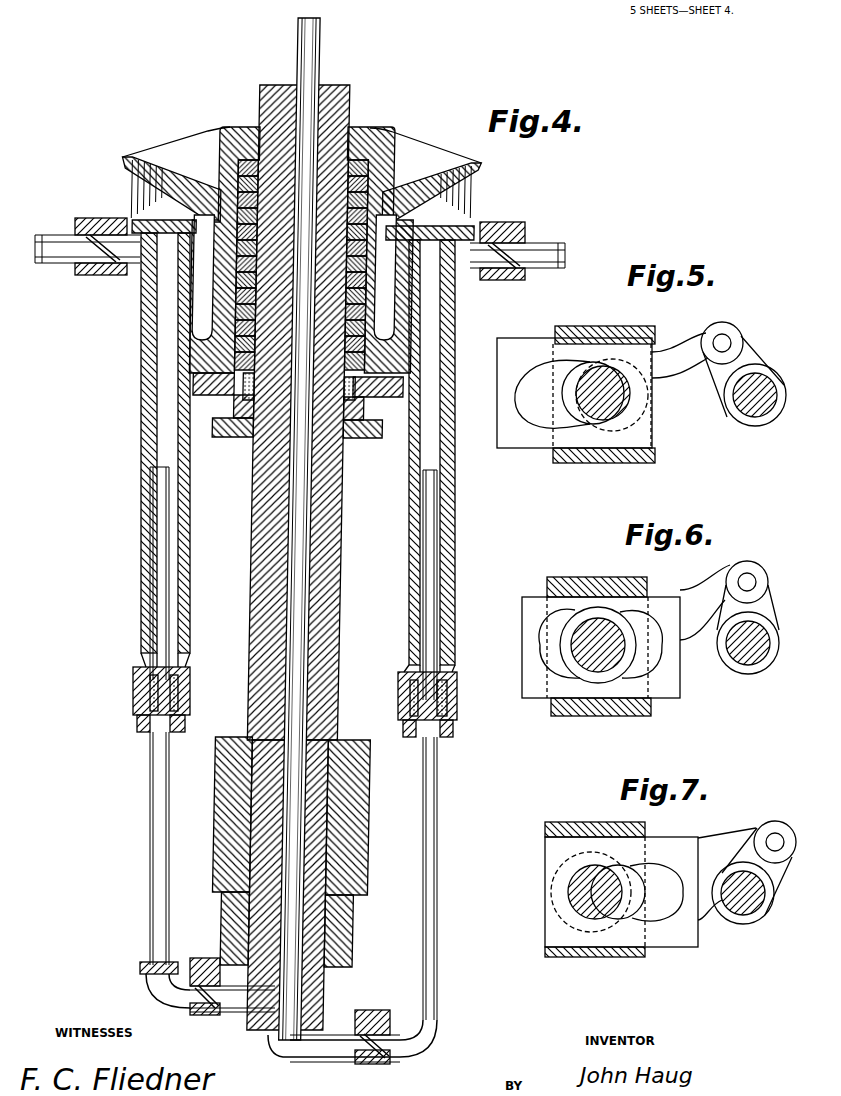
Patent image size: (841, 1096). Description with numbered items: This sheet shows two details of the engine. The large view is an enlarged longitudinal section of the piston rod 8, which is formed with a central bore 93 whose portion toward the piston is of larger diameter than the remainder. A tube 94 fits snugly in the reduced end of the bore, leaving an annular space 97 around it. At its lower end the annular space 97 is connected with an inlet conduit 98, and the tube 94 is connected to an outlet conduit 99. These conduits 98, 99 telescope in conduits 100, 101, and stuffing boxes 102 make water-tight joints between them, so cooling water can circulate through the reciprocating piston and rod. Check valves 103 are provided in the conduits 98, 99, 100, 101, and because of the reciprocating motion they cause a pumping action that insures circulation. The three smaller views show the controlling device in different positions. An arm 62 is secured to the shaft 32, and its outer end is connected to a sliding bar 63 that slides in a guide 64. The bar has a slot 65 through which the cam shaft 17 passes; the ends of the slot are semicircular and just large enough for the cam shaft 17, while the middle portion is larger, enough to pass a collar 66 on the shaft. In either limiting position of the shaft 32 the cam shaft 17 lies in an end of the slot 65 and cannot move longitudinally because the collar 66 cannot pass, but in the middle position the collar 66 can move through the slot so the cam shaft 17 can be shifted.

In FIG. 4, the piston rod 8 is at (334, 492).
In FIG. 5, the cam shaft 17 is at (615, 380).
In FIG. 6, the cam shaft 17 is at (590, 630).
In FIG. 7, the cam shaft 17 is at (586, 870).
In FIG. 5, the shaft 32 is at (757, 414).
In FIG. 6, the shaft 32 is at (751, 665).
In FIG. 7, the shaft 32 is at (750, 912).
In FIG. 5, the arm 62 is at (752, 360).
In FIG. 6, the arm 62 is at (772, 604).
In FIG. 7, the arm 62 is at (745, 846).
In FIG. 5, the sliding bar 63 is at (660, 370).
In FIG. 6, the sliding bar 63 is at (680, 672).
In FIG. 7, the sliding bar 63 is at (690, 842).
In FIG. 5, the guide 64 is at (655, 462).
In FIG. 6, the guide 64 is at (590, 580).
In FIG. 7, the guide 64 is at (594, 830).
In FIG. 5, the slot 65 is at (546, 430).
In FIG. 6, the slot 65 is at (652, 632).
In FIG. 7, the slot 65 is at (670, 876).
In FIG. 5, the collar 66 is at (566, 394).
In FIG. 6, the collar 66 is at (580, 675).
In FIG. 7, the collar 66 is at (632, 892).
In FIG. 4, the central bore 93 is at (311, 570).
In FIG. 4, the tube 94 is at (311, 607).
In FIG. 4, the annular space 97 is at (282, 522).
In FIG. 4, the inlet conduit 98 is at (150, 770).
In FIG. 4, the outlet conduit 99 is at (437, 768).
In FIG. 4, the conduit 100 is at (165, 456).
In FIG. 4, the conduit 101 is at (429, 470).
In FIG. 4, the stuffing box 102 is at (137, 696).
In FIG. 4, the check valve 103 is at (375, 1066).